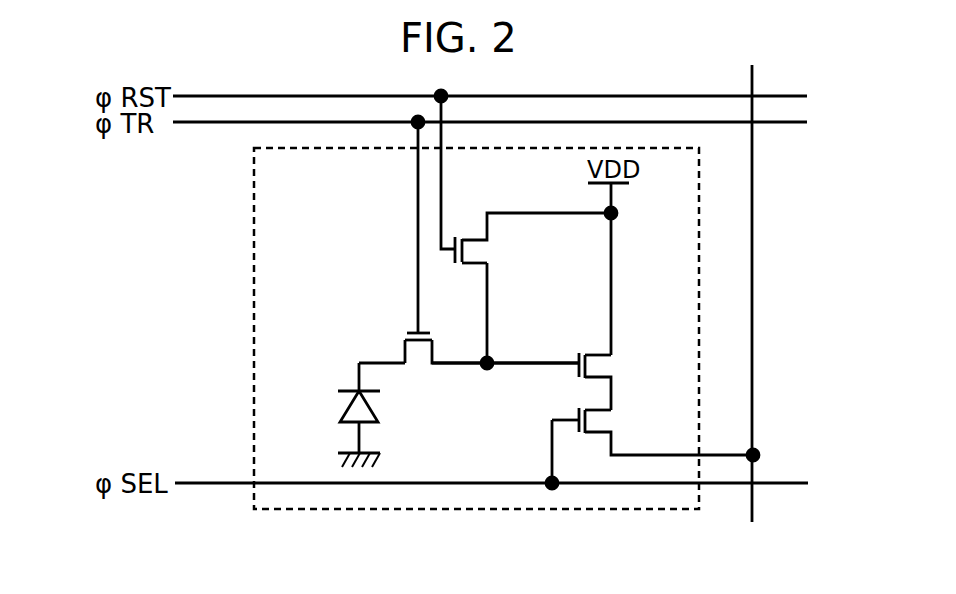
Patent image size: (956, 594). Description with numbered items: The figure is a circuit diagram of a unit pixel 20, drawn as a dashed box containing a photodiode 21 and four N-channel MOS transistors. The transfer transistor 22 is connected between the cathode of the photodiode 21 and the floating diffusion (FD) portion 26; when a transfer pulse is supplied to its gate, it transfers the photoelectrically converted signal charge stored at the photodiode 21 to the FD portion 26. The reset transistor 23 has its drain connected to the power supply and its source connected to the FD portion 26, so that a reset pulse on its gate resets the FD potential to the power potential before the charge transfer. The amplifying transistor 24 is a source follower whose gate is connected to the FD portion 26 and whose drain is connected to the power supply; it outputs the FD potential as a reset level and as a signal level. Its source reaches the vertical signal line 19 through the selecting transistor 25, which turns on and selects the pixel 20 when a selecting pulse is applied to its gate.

The vertical signal line 19 is at (754, 223).
The pixel 20 is at (492, 510).
The photodiode 21 is at (346, 412).
The transfer transistor 22 is at (421, 355).
The reset transistor 23 is at (480, 252).
The amplifying transistor 24 is at (598, 368).
The selecting transistor 25 is at (598, 422).
The floating diffusion (FD) portion 26 is at (487, 369).